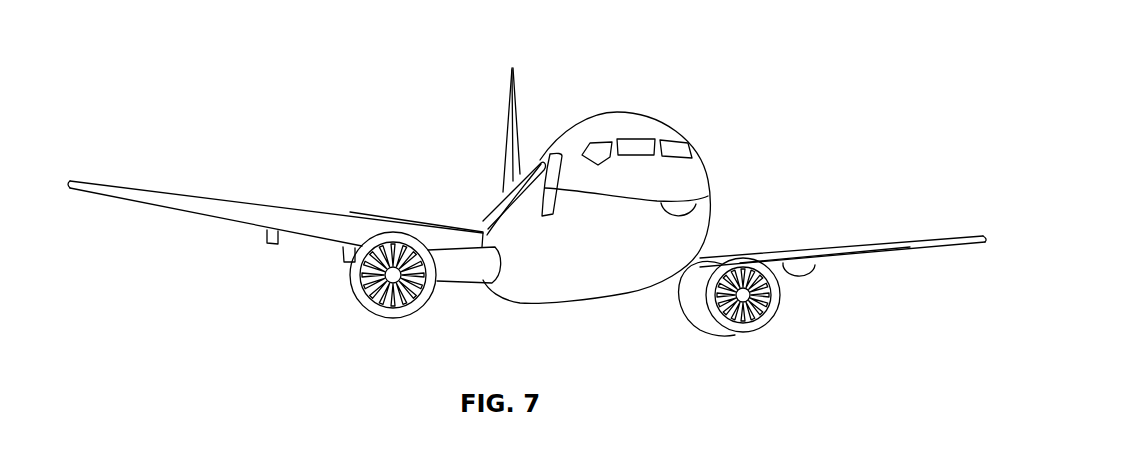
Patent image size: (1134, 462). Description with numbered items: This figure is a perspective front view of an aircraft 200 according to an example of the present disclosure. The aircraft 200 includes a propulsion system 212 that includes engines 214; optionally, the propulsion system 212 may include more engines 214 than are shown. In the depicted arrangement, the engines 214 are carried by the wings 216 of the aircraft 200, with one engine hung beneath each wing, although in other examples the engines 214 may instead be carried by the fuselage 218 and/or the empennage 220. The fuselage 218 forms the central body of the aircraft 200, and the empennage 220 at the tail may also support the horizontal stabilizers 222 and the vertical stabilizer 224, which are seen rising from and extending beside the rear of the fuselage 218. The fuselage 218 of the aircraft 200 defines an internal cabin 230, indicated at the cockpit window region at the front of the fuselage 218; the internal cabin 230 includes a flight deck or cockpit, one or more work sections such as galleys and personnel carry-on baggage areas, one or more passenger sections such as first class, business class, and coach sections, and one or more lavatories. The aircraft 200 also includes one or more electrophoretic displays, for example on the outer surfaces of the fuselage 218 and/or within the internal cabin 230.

The aircraft 200 is at (298, 66).
The propulsion system 212 is at (826, 315).
The engines 214 is at (388, 317).
The wings 216 is at (194, 207).
The fuselage 218 is at (705, 170).
The empennage 220 is at (502, 197).
The horizontal stabilizers 222 is at (383, 215).
The vertical stabilizer 224 is at (509, 108).
The internal cabin 230 is at (637, 147).